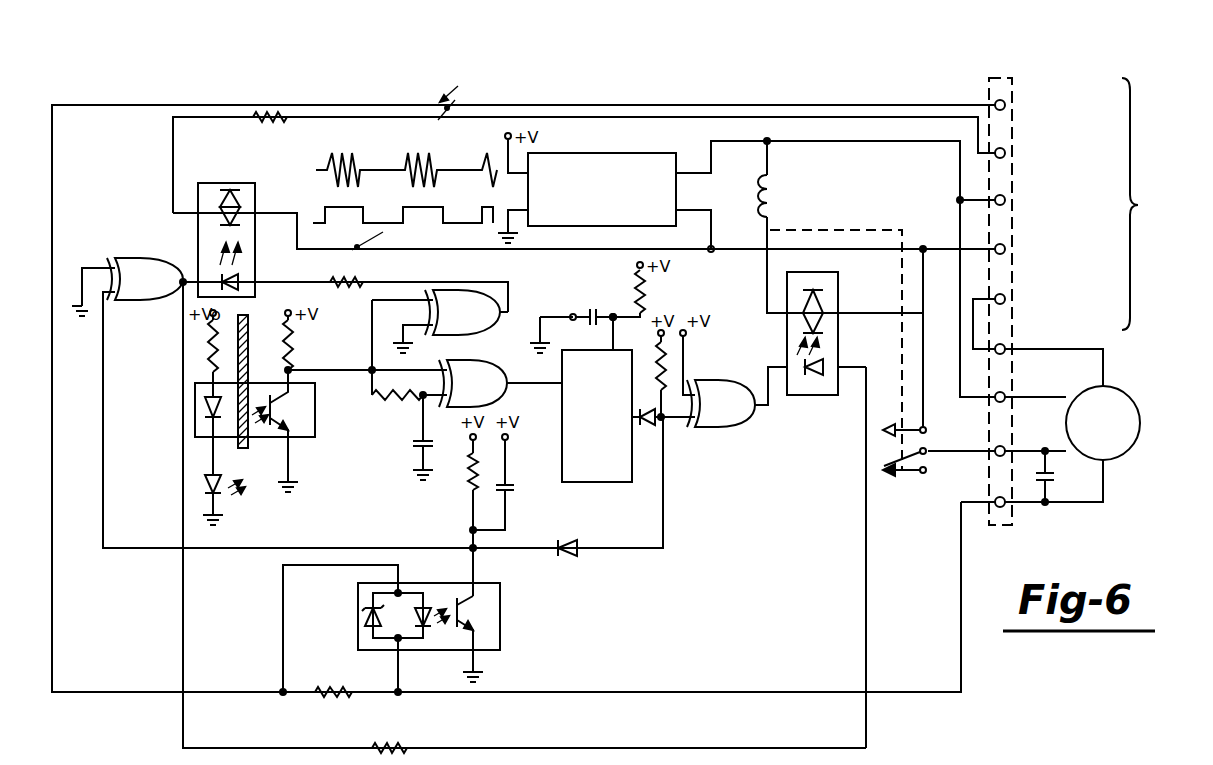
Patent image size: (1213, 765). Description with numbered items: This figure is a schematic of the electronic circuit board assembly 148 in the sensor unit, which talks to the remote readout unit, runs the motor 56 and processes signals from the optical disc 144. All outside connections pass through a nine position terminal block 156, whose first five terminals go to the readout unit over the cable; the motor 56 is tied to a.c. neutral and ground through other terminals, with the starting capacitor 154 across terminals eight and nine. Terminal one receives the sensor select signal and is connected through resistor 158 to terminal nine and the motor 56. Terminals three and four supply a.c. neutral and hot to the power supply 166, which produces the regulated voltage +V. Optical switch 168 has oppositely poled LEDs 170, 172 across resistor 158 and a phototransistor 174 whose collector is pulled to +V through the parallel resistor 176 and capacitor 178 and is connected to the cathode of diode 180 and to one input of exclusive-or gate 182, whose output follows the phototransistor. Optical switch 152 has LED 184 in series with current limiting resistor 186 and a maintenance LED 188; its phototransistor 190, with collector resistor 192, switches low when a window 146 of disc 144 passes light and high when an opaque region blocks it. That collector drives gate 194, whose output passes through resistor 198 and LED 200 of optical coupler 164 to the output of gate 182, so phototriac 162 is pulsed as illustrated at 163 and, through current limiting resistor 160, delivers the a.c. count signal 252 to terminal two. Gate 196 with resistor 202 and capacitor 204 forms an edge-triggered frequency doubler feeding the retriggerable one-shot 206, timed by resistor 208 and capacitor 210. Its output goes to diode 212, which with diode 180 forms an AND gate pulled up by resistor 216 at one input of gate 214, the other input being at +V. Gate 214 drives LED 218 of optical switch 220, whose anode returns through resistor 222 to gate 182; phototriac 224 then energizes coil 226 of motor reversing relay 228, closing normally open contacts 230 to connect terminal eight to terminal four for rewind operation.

The motor 56 is at (1135, 400).
The optical disc 144 is at (250, 445).
The window 146 is at (250, 320).
The electronic circuit board assembly 148 is at (425, 84).
The optical switch 152 is at (195, 430).
The starting capacitor 154 is at (1056, 480).
The terminal block 156 is at (1000, 78).
The resistor 158 is at (318, 698).
The current limiting resistor 160 is at (285, 112).
The phototriac 162 is at (233, 192).
The pulsed switching waveform 163 is at (313, 223).
The optical coupler 164 is at (205, 183).
The power supply 166 is at (650, 153).
The optical switch 168 is at (500, 600).
The light emitting diode 170 is at (366, 617).
The light emitting diode 172 is at (470, 530).
The phototransistor 174 is at (470, 620).
The resistor 176 is at (468, 470).
The capacitor 178 is at (512, 488).
The diode 180 is at (577, 545).
The exclusive-or gate 182 is at (145, 279).
The light emitting diode 184 is at (205, 405).
The current limiting resistor 186 is at (208, 340).
The light emitting diode 188 is at (208, 485).
The phototransistor 190 is at (300, 412).
The resistor 192 is at (294, 335).
The exclusive-or gate 194 is at (462, 312).
The exclusive-or gate 196 is at (473, 383).
The resistor 198 is at (365, 280).
The light emitting diode 200 is at (240, 278).
The current limiting resistor 202 is at (385, 402).
The capacitor 204 is at (415, 445).
The retriggerable one-shot 206 is at (615, 452).
The resistor 208 is at (647, 295).
The capacitor 210 is at (590, 308).
The diode 212 is at (650, 425).
The exclusive-or gate 214 is at (721, 403).
The resistor 216 is at (666, 367).
The light emitting diode 218 is at (823, 365).
The optical switch 220 is at (805, 395).
The resistor 222 is at (405, 748).
The phototriac 224 is at (818, 300).
The relay coil 226 is at (772, 195).
The motor reversing relay 228 is at (820, 231).
The relay switch contacts 230 is at (905, 465).
The count signal 252 is at (327, 165).